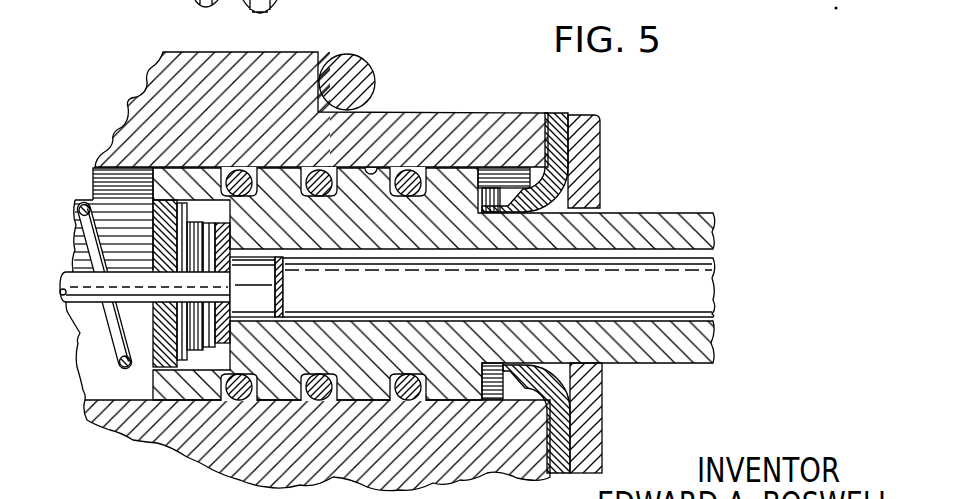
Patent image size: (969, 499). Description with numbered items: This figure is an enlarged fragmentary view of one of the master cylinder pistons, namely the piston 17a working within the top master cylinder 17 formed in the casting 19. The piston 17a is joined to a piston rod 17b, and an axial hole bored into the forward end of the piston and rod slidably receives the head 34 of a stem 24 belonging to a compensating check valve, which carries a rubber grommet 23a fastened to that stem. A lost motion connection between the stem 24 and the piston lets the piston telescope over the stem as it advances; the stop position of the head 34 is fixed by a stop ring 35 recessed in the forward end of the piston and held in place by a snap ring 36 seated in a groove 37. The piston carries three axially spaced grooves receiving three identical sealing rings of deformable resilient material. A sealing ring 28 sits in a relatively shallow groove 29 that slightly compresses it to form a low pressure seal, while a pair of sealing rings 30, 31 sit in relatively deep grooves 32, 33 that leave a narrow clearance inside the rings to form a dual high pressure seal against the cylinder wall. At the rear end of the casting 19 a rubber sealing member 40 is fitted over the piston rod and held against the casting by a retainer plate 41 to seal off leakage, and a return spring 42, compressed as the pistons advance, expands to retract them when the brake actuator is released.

The master cylinder 17 is at (383, 167).
The piston 17a is at (165, 166).
The piston rod 17b is at (638, 213).
The casting 19 is at (172, 51).
The rubber grommet 23a is at (74, 248).
The stem 24 is at (80, 335).
The sealing ring 28 is at (414, 168).
The groove 29 is at (462, 168).
The sealing ring 30 is at (262, 165).
The sealing ring 31 is at (333, 168).
The groove 32 is at (230, 167).
The groove 33 is at (318, 167).
The head 34 is at (287, 281).
The stop ring 35 is at (190, 253).
The snap ring 36 is at (187, 240).
The groove 37 is at (214, 345).
The rubber sealing member 40 is at (558, 113).
The retainer plate 41 is at (602, 136).
The return spring 42 is at (372, 58).